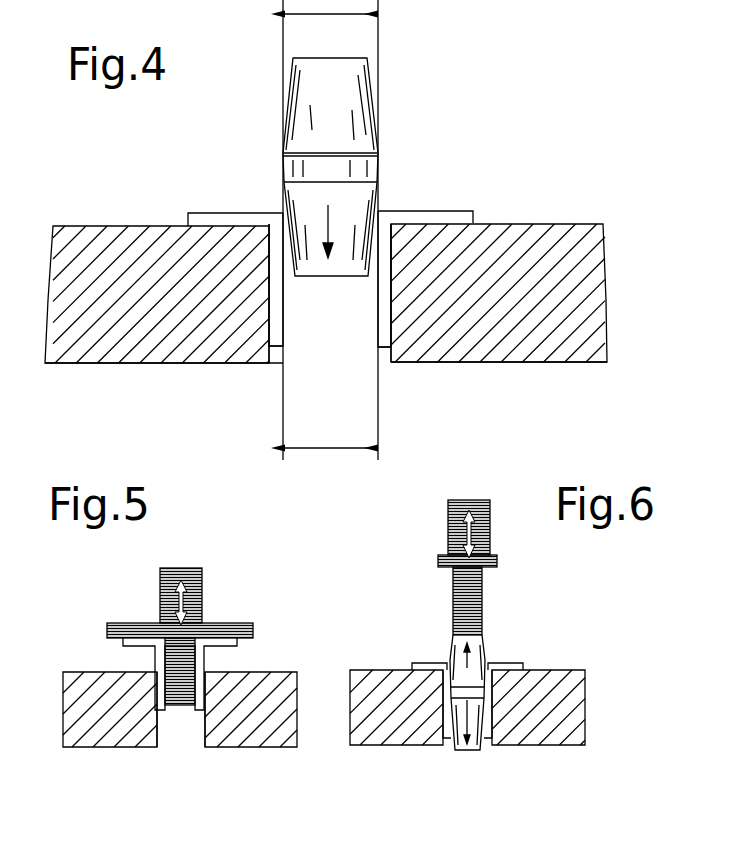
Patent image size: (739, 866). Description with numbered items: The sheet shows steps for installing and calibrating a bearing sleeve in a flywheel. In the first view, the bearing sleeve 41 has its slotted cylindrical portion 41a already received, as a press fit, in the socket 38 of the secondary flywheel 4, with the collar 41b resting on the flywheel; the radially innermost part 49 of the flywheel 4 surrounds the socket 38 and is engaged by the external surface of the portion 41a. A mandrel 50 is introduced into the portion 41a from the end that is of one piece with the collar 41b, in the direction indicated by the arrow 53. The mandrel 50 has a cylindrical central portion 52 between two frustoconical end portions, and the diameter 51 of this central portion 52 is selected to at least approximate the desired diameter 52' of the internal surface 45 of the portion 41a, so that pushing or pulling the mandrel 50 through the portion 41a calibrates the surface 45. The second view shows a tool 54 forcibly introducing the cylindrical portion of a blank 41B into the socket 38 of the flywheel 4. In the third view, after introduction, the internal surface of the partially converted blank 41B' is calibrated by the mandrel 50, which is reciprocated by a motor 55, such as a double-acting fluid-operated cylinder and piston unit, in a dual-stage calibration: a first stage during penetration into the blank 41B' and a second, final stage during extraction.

In FIG. 4, the secondary flywheel 4 is at (583, 245).
In FIG. 5, the secondary flywheel 4 is at (262, 727).
In FIG. 6, the secondary flywheel 4 is at (467, 707).
In FIG. 4, the socket 38 is at (393, 265).
In FIG. 5, the socket 38 is at (204, 727).
In FIG. 4, the bearing sleeve 41 is at (397, 215).
In FIG. 4, the cylindrical portion 41a is at (385, 333).
In FIG. 4, the collar 41b is at (453, 215).
In FIG. 6, the collar 41b is at (515, 662).
In FIG. 5, the blank 41B is at (168, 721).
In FIG. 6, the partially converted blank 41B' is at (487, 739).
In FIG. 4, the internal surface 45 is at (196, 362).
In FIG. 4, the radially innermost part of the flywheel 49 is at (435, 348).
In FIG. 4, the mandrel 50 is at (328, 270).
In FIG. 6, the mandrel 50 is at (483, 643).
In FIG. 4, the diameter of the central portion 51 is at (330, 230).
In FIG. 4, the cylindrical central portion 52 is at (357, 148).
In FIG. 4, the desired diameter of the internal surface 52' is at (330, 428).
In FIG. 4, the arrow 53 is at (330, 208).
In FIG. 5, the tool 54 is at (200, 575).
In FIG. 6, the motor 55 is at (490, 503).